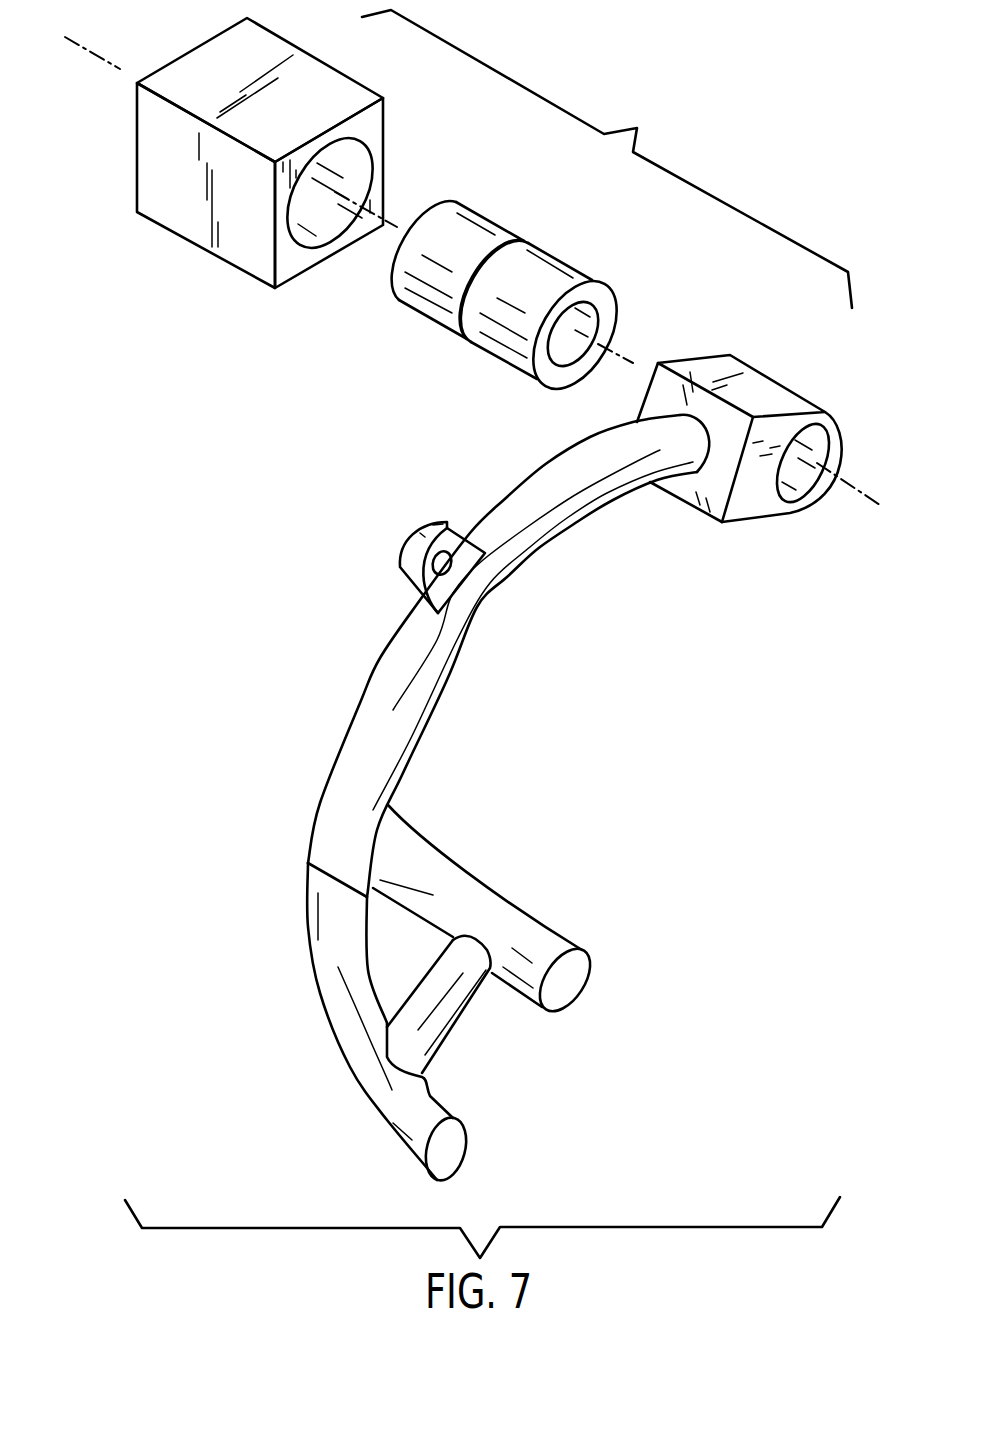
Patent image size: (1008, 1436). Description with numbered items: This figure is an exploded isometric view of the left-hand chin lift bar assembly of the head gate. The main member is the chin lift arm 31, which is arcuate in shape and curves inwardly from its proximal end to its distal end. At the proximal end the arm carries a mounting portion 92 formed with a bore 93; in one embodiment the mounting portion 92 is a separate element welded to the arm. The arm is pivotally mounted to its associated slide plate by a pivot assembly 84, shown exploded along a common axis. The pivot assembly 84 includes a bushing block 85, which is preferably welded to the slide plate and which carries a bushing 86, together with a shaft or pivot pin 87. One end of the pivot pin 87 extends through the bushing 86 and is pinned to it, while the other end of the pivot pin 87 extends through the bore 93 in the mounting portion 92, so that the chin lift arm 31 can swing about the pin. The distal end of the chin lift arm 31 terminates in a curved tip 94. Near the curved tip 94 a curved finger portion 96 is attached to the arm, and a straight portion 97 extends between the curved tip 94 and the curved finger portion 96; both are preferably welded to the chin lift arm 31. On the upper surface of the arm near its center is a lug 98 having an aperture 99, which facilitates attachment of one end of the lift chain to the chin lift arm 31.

The chin lift arm 31 is at (368, 717).
The pivot assembly 84 is at (607, 159).
The bushing block 85 is at (345, 86).
The bushing 86 is at (480, 218).
The pivot pin 87 is at (553, 257).
The mounting portion 92 is at (744, 434).
The bore 93 is at (802, 485).
The curved tip 94 is at (332, 1023).
The curved finger portion 96 is at (512, 918).
The straight portion 97 is at (457, 1013).
The lug 98 is at (475, 547).
The aperture 99 is at (447, 567).